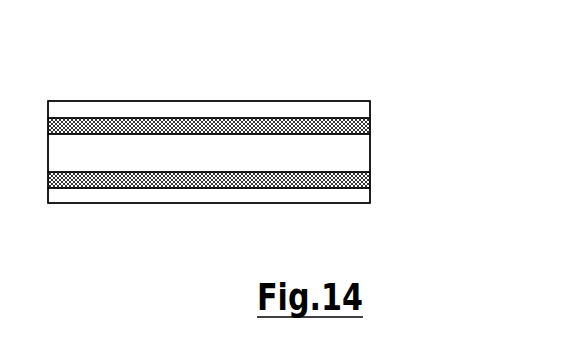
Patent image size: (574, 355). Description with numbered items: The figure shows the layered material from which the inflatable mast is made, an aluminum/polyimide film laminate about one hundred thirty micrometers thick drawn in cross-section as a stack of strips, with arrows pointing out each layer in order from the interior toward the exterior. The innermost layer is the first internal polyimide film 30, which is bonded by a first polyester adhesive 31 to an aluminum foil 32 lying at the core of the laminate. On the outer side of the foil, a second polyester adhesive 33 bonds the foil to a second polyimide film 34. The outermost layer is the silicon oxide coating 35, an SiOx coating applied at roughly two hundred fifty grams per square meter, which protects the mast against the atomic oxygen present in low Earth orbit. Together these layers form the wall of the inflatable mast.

The first internal polyimide film 30 is at (372, 197).
The first polyester adhesive 31 is at (372, 180).
The aluminum foil 32 is at (372, 154).
The second polyester adhesive 33 is at (372, 127).
The second polyimide film 34 is at (372, 108).
The silicon oxide coating 35 is at (375, 90).